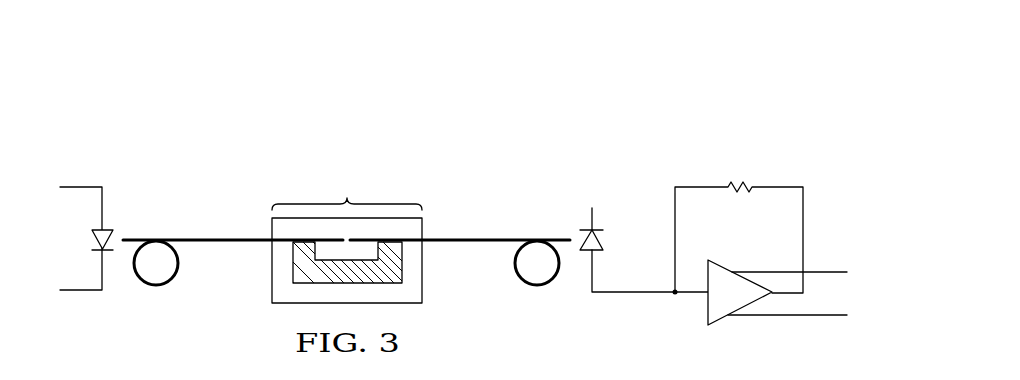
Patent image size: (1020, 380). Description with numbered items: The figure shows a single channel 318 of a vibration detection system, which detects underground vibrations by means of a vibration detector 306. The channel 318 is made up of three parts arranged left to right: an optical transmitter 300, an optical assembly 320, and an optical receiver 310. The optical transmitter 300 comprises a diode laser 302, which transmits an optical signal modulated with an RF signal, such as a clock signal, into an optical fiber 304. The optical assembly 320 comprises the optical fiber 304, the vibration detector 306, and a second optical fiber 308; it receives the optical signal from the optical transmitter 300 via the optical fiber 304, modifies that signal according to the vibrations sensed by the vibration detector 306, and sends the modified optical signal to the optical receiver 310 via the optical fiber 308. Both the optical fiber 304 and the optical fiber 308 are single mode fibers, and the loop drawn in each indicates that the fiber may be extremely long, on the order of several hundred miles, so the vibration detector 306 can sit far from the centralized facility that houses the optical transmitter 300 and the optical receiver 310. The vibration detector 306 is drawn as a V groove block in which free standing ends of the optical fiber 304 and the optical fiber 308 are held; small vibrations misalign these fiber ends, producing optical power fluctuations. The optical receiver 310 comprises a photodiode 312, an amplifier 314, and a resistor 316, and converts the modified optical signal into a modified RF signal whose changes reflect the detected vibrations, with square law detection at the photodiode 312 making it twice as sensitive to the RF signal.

The optical transmitter 300 is at (77, 125).
The diode laser 302 is at (97, 240).
The optical fiber 304 is at (220, 238).
The vibration detector 306 is at (272, 282).
The optical fiber 308 is at (473, 237).
The optical receiver 310 is at (712, 202).
The photodiode 312 is at (597, 240).
The amplifier 314 is at (707, 302).
The resistor 316 is at (740, 183).
The channel 318 is at (639, 73).
The optical assembly 320 is at (523, 156).